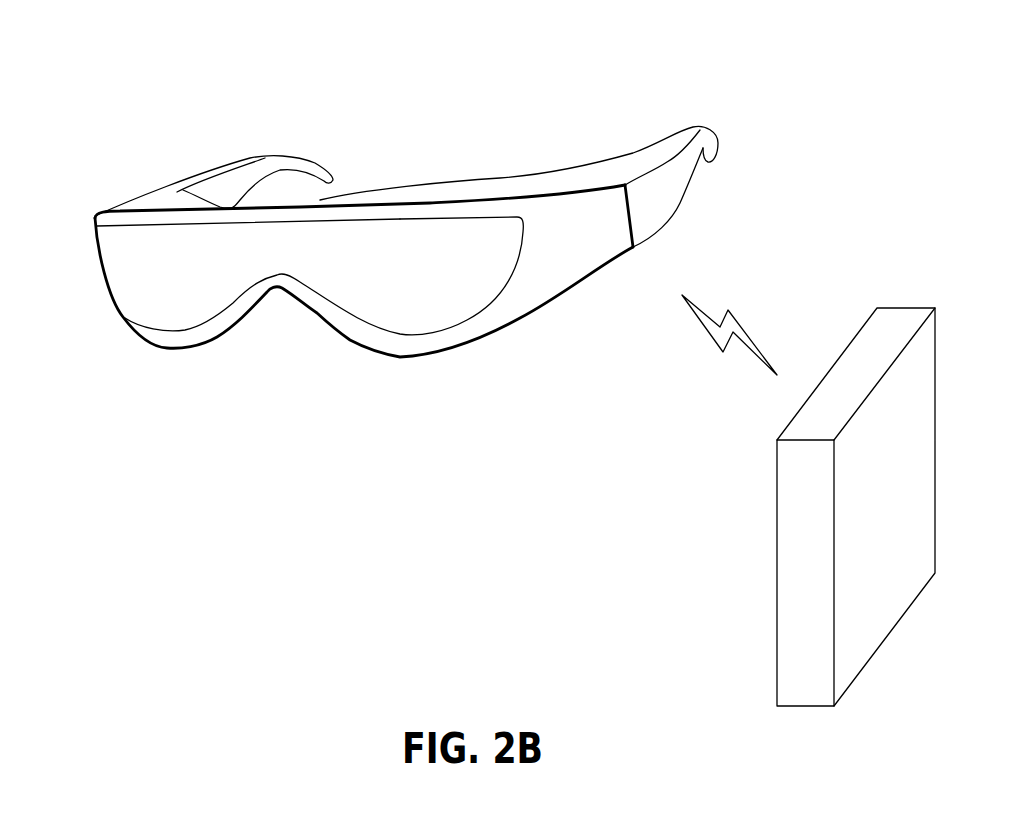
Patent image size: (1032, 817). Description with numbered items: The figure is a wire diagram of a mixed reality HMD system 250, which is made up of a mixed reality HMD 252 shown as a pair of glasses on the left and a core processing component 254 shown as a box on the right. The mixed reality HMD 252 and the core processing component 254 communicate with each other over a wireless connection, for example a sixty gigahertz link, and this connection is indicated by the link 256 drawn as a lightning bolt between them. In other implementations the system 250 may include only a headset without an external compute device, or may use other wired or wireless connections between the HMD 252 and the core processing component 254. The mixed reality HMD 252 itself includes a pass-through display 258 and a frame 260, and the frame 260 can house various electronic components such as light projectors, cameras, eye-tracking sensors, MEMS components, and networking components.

The mixed reality HMD system 250 is at (702, 64).
The mixed reality HMD 252 is at (94, 226).
The core processing component 254 is at (777, 505).
The link 256 is at (718, 350).
The pass-through display 258 is at (523, 221).
The frame 260 is at (657, 188).